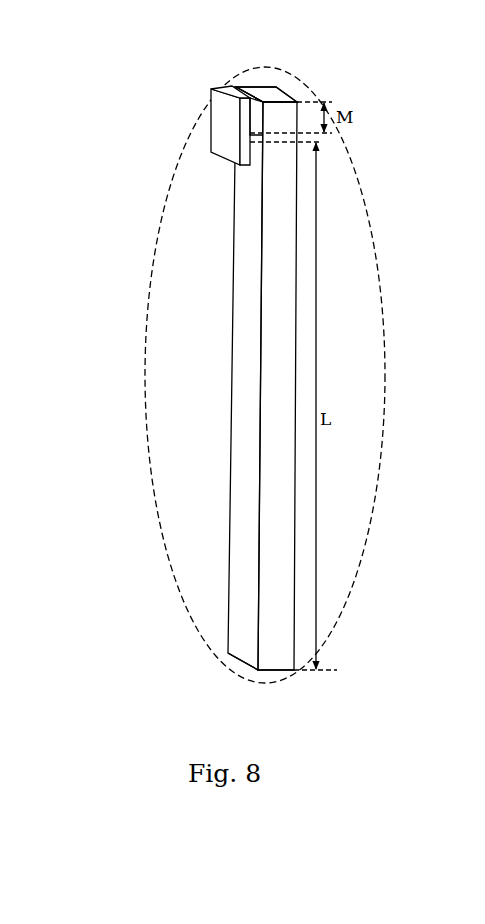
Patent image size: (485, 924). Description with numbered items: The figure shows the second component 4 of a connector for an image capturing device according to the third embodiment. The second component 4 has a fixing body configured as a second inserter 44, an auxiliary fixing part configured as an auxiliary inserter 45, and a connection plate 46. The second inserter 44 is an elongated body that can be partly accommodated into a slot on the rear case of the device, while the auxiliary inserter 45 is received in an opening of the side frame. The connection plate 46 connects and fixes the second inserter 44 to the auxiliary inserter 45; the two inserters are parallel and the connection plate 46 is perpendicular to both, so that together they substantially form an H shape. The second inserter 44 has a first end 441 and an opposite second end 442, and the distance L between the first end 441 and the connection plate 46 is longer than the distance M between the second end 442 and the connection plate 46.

The second component 4 is at (146, 430).
The second inserter 44 is at (278, 313).
The first end 441 is at (279, 668).
The second end 442 is at (283, 94).
The auxiliary inserter 45 is at (227, 118).
The connection plate 46 is at (257, 135).